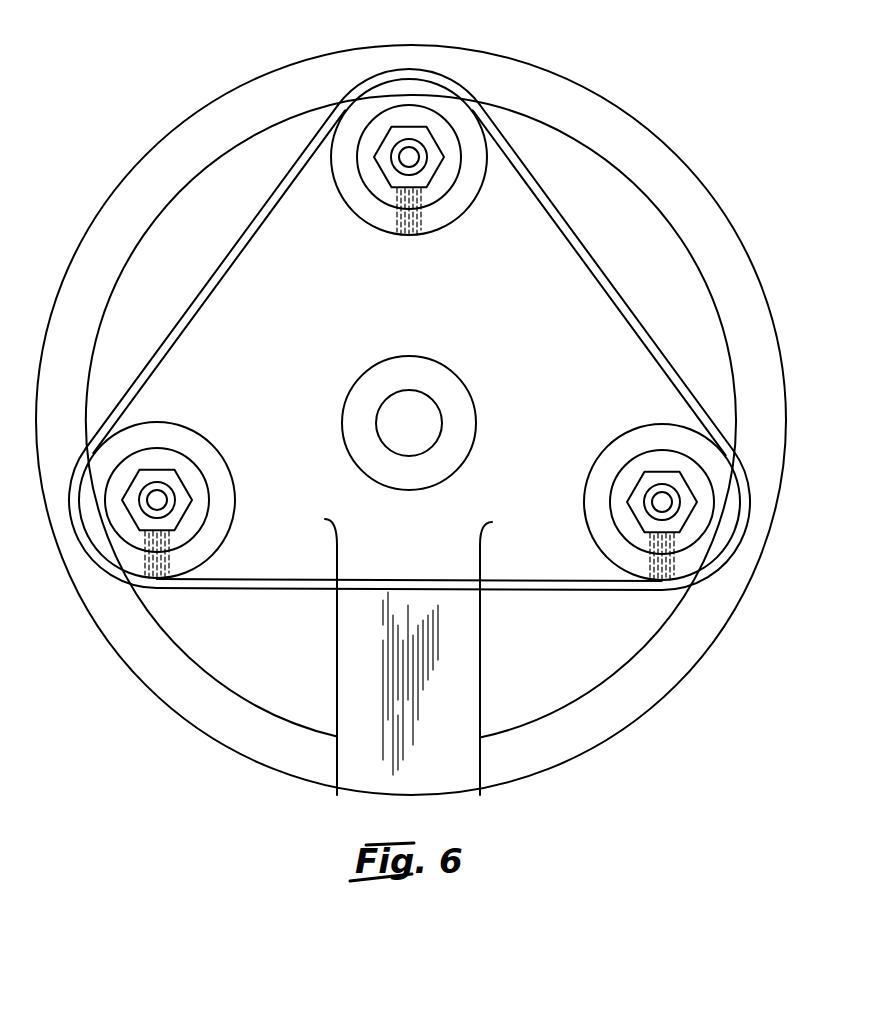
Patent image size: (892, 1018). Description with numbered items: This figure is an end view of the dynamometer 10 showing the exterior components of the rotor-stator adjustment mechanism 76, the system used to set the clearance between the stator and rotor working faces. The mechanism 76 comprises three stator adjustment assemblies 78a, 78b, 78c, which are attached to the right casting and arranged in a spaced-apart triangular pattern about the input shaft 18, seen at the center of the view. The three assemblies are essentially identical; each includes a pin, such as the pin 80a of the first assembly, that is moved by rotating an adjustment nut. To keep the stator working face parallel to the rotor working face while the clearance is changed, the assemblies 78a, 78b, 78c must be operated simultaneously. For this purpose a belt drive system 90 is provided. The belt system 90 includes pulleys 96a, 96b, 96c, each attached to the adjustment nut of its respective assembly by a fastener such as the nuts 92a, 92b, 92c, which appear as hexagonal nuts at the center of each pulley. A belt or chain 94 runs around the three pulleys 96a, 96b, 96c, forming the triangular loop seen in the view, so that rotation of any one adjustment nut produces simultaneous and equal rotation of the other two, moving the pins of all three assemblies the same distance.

The gun tube cleaning apparatus 10 is at (634, 86).
The input shaft 18 is at (420, 407).
The rotor-stator adjustment mechanism 76 is at (378, 42).
The stator adjustment assembly 78a is at (489, 174).
The stator adjustment assembly 78b is at (217, 555).
The stator adjustment assembly 78c is at (603, 558).
The pin 80a is at (393, 165).
The belt drive system 90 is at (568, 251).
The nut 92a is at (416, 127).
The nut 92b is at (173, 482).
The nut 92c is at (637, 497).
The belt or chain 94 is at (566, 224).
The pulley 96a is at (437, 218).
The pulley 96b is at (202, 453).
The pulley 96c is at (603, 465).